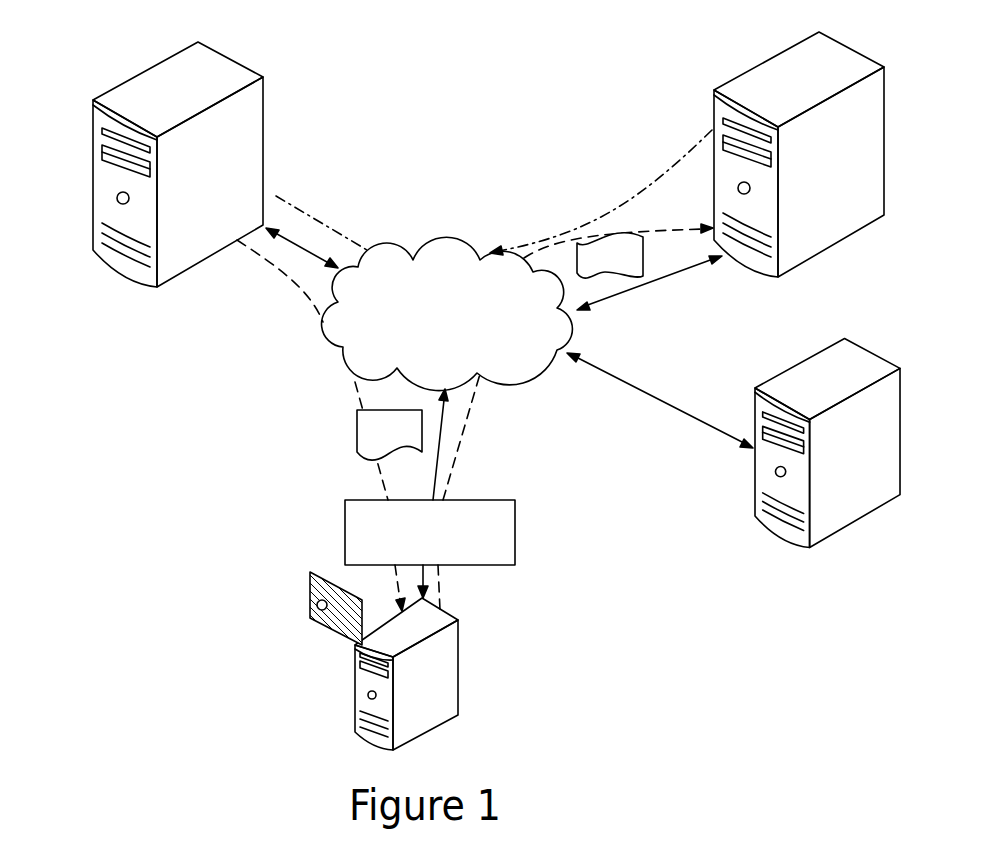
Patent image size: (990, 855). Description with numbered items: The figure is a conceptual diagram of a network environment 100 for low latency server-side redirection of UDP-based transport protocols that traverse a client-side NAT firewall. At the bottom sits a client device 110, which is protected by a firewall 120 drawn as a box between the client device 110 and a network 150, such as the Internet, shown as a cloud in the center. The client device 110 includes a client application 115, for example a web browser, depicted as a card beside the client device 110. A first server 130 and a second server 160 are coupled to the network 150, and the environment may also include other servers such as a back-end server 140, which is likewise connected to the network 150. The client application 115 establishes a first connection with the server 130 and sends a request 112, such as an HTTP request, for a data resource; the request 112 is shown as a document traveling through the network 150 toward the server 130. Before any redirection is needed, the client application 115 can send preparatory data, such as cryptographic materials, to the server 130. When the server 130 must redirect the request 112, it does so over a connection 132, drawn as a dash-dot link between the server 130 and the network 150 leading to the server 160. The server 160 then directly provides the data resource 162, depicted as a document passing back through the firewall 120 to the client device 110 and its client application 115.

The network environment 100 is at (94, 43).
The client device 110 is at (460, 657).
The request 112 is at (593, 269).
The client application 115 is at (310, 603).
The firewall 120 is at (412, 556).
The first server 130 is at (885, 130).
The connection 132 is at (601, 192).
The back-end server 140 is at (900, 397).
The network 150 is at (427, 338).
The second server 160 is at (263, 78).
The data resource 162 is at (372, 443).